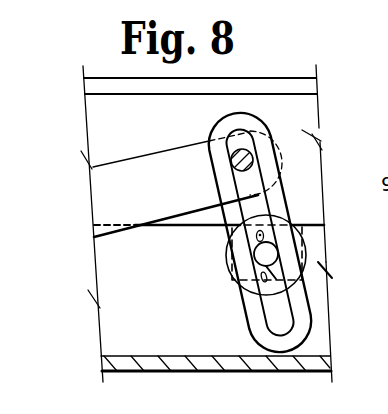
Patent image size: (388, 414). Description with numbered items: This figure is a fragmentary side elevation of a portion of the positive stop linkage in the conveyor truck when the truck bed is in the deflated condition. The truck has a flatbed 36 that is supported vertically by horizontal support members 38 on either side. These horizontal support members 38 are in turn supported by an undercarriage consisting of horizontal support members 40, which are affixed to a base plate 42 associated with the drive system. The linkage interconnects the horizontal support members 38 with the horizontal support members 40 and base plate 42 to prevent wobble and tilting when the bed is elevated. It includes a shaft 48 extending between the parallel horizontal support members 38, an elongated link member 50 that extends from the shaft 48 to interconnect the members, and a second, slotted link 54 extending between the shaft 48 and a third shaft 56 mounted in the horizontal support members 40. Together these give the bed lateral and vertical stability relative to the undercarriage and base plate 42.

The flatbed 36 is at (277, 78).
The horizontal support member 38 is at (324, 140).
The horizontal support member 40 is at (321, 284).
The base plate 42 is at (195, 356).
The shaft 48 is at (253, 163).
The elongated link member 50 is at (171, 185).
The slotted link 54 is at (307, 309).
The third shaft 56 is at (278, 253).